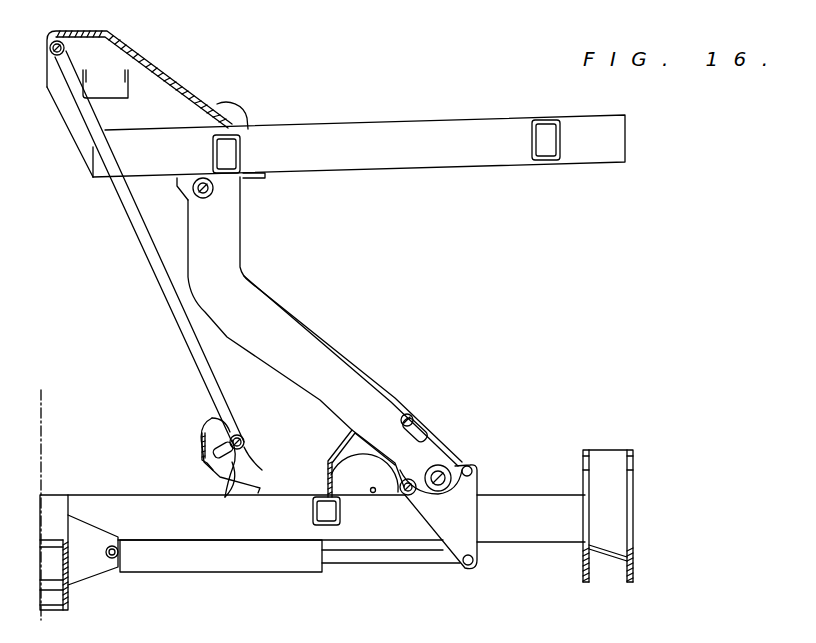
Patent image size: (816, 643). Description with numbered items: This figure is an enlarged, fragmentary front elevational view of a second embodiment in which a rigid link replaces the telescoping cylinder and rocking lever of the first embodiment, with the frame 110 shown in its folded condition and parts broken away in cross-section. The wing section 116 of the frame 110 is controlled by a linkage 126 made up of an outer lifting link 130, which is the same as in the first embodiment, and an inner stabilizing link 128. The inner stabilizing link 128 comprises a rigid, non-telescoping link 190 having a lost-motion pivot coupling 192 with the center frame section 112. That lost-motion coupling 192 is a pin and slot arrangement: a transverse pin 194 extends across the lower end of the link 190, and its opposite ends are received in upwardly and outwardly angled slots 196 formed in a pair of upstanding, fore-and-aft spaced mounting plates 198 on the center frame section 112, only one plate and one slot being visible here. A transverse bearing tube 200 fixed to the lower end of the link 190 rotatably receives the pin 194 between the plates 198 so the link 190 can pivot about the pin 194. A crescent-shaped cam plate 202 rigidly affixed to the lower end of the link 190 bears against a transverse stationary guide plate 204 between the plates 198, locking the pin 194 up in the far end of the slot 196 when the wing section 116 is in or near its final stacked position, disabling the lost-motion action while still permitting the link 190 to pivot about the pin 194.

The frame 110 is at (535, 486).
The center frame section 112 is at (127, 508).
The wing section 116 is at (413, 128).
The linkage 126 is at (262, 268).
The inner stabilizing link 128 is at (137, 262).
The outer lifting link 130 is at (307, 333).
The rigid non-telescoping link 190 is at (176, 312).
The lost-motion pivot coupling 192 is at (203, 417).
The transverse pin 194 is at (244, 447).
The slot 196 is at (226, 497).
The mounting plate 198 is at (293, 438).
The transverse bearing tube 200 is at (243, 437).
The crescent-shaped cam plate 202 is at (211, 428).
The stationary guide plate 204 is at (200, 452).